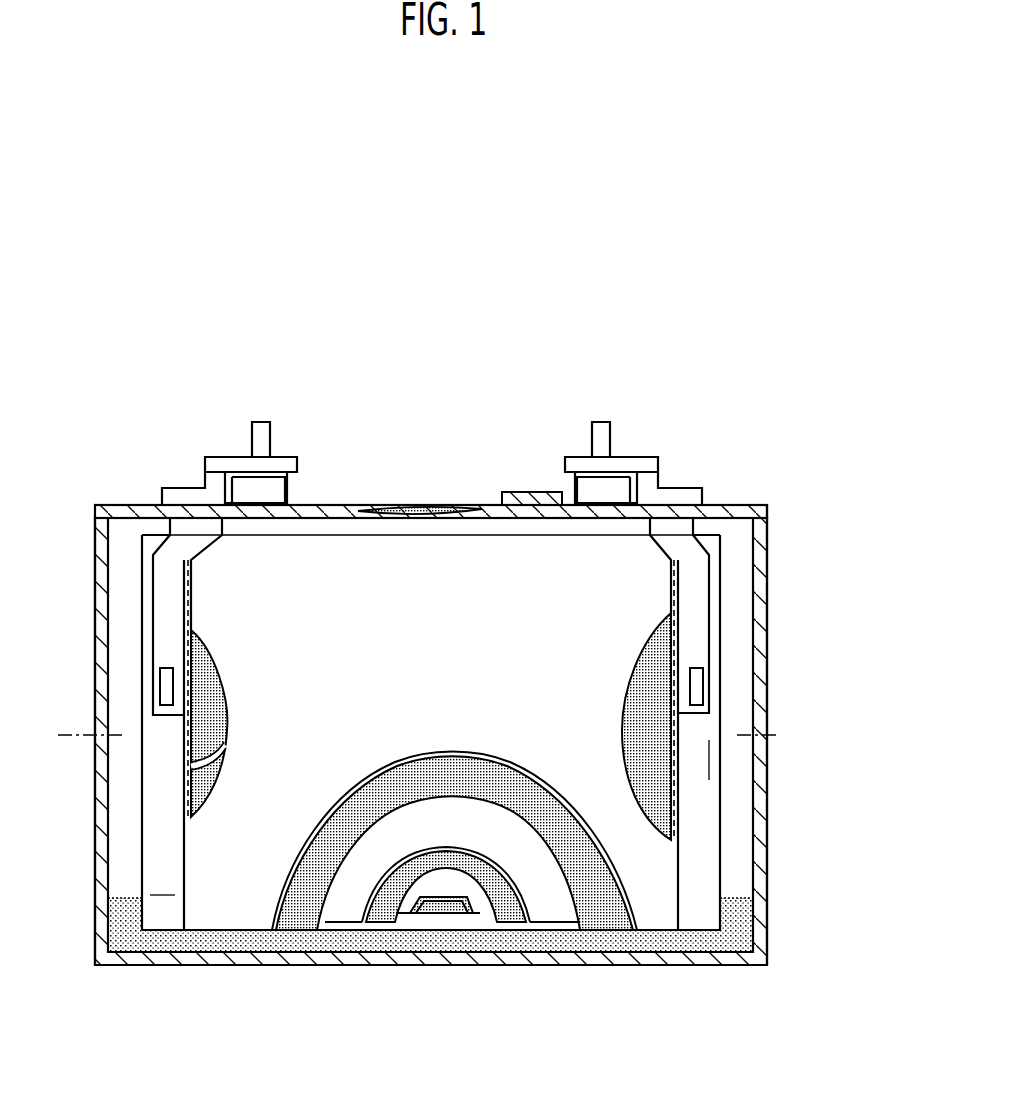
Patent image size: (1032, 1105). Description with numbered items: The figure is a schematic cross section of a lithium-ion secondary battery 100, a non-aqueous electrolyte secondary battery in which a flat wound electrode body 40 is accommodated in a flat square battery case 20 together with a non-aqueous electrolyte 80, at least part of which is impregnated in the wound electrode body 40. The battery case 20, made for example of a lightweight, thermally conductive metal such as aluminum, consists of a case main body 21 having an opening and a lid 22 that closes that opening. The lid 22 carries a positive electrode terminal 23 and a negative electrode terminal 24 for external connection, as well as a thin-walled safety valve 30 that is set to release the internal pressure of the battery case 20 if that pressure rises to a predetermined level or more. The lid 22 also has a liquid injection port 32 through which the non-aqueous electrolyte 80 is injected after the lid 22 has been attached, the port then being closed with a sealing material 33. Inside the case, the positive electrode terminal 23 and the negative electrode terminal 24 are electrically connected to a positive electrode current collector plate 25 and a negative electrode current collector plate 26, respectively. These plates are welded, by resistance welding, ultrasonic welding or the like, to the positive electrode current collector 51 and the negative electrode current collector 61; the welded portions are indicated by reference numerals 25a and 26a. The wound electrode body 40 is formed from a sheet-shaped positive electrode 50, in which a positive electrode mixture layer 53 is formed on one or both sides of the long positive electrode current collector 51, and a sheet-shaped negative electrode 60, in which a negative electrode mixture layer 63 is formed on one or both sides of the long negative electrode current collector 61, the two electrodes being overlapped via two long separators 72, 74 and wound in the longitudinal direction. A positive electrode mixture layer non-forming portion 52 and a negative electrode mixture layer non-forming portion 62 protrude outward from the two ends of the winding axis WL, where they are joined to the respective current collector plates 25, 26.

The lithium-ion secondary battery 100 is at (779, 460).
The battery case 20 is at (566, 970).
The case main body 21 is at (770, 920).
The lid 22 is at (343, 503).
The positive electrode terminal 23 is at (243, 442).
The negative electrode terminal 24 is at (622, 442).
The positive electrode current collector plate 25 is at (142, 602).
The welded portion 25a is at (158, 680).
The negative electrode current collector plate 26 is at (712, 612).
The welded portion 26a is at (703, 678).
The safety valve 30 is at (430, 504).
The liquid injection port 32 is at (544, 463).
The sealing material 33 is at (520, 492).
The wound electrode body 40 is at (313, 565).
The positive electrode 50 is at (397, 913).
The positive electrode current collector 51 is at (142, 880).
The positive electrode mixture layer non-forming portion 52 is at (160, 902).
The positive electrode mixture layer 53 is at (215, 690).
The negative electrode 60 is at (186, 812).
The negative electrode current collector 61 is at (723, 803).
The negative electrode mixture layer non-forming portion 62 is at (708, 766).
The negative electrode mixture layer 63 is at (630, 652).
The separator 72 is at (230, 850).
The separator 74 is at (190, 764).
The non-aqueous electrolyte 80 is at (688, 942).
The winding axis WL is at (780, 735).